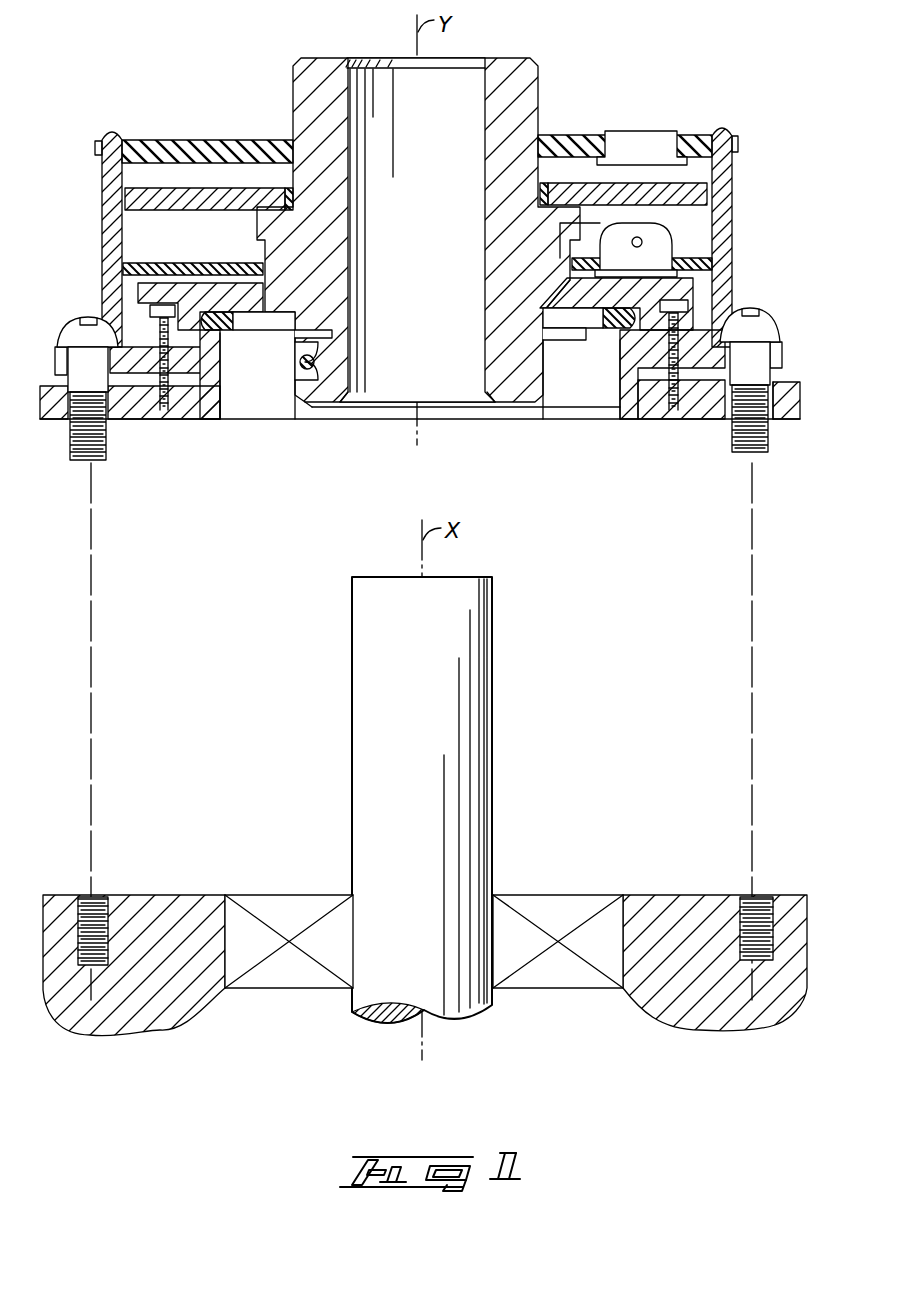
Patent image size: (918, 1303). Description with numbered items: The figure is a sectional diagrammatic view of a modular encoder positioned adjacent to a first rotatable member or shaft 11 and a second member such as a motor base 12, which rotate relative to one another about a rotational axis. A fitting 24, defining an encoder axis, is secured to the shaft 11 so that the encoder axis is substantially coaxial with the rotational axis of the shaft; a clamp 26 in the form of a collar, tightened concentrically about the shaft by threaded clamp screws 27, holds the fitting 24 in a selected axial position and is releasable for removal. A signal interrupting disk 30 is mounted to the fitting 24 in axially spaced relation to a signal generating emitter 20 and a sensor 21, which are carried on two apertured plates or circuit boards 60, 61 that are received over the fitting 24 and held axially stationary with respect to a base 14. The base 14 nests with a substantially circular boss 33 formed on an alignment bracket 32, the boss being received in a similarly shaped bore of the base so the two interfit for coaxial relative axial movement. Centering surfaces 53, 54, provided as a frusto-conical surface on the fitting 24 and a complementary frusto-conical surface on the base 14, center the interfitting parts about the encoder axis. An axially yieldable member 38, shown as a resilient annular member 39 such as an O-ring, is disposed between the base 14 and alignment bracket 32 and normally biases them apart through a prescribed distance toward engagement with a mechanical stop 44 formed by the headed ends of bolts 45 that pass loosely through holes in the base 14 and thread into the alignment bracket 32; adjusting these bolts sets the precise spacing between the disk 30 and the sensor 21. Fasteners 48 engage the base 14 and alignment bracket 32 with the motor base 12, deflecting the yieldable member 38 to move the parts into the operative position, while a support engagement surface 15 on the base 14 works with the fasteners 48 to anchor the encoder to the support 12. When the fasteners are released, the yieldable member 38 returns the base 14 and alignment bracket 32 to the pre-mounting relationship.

The first rotatable member 11 is at (492, 695).
The second rotatable member 12 is at (650, 893).
The base 14 is at (792, 355).
The support engagement surface 15 is at (603, 420).
The signal generating emitter 20 is at (668, 233).
The sensor 21 is at (648, 135).
The fitting 24 is at (515, 52).
The clamp 26 is at (318, 414).
The threaded clamp screw 27 is at (297, 375).
The signal interrupting disk 30 is at (692, 183).
The alignment bracket 32 is at (792, 430).
The boss 33 is at (622, 352).
The axially yieldable member 38 is at (607, 333).
The resilient annular member 39 is at (288, 336).
The mechanical stop 44 is at (690, 286).
The bolt 45 is at (162, 304).
The fastener 48 is at (74, 305).
The centering surface 53 is at (563, 310).
The centering surface 54 is at (570, 296).
The plate or circuit board 60 is at (717, 250).
The plate or circuit board 61 is at (703, 138).